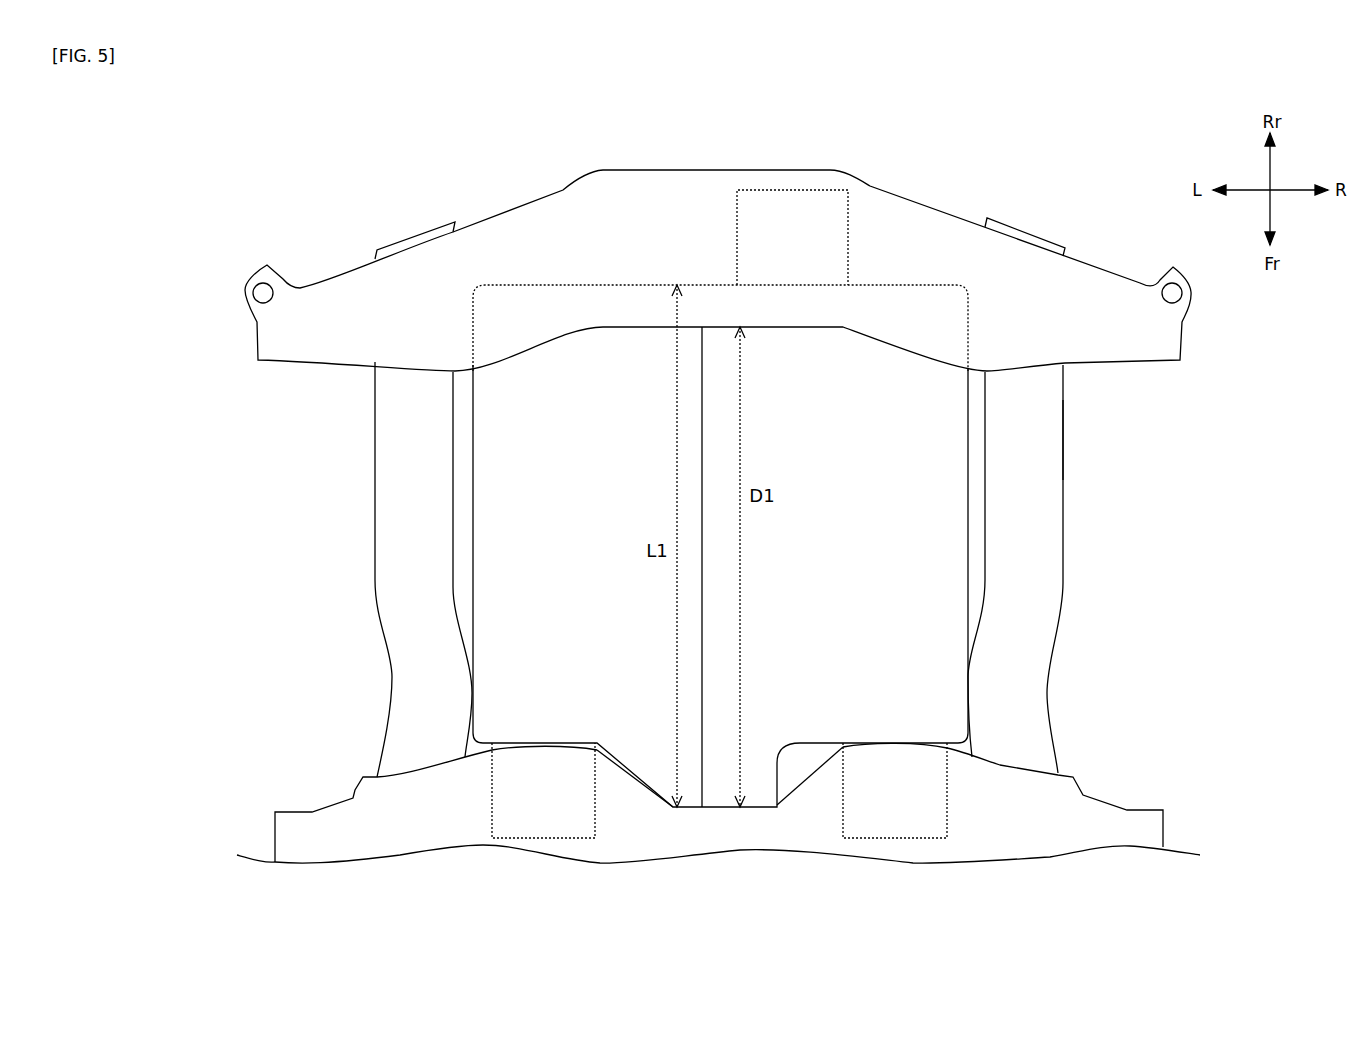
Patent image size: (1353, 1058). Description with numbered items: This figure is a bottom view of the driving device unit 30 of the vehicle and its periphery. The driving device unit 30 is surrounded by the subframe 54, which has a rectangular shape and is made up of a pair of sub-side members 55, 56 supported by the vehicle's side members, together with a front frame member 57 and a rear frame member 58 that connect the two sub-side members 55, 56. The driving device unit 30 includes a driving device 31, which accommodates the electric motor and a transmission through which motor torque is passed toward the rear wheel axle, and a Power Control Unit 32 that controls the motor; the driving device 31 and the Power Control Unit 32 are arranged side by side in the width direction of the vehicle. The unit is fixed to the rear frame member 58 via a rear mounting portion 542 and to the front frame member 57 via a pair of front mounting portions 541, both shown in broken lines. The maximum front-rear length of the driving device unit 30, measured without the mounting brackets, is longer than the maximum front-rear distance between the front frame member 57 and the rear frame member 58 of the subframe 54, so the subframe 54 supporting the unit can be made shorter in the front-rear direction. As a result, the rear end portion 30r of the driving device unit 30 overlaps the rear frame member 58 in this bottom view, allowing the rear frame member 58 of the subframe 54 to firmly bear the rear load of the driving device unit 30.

The driving device unit 30 is at (815, 567).
The rear end portion 30r is at (548, 310).
The driving device 31 is at (630, 627).
The Power Control Unit 32 is at (920, 673).
The subframe 54 is at (1065, 440).
The front mounting portion 541 is at (535, 807).
The rear mounting portion 542 is at (795, 212).
The sub-side member 55 is at (1045, 550).
The sub-side member 56 is at (388, 557).
The front frame member 57 is at (735, 830).
The rear frame member 58 is at (655, 225).